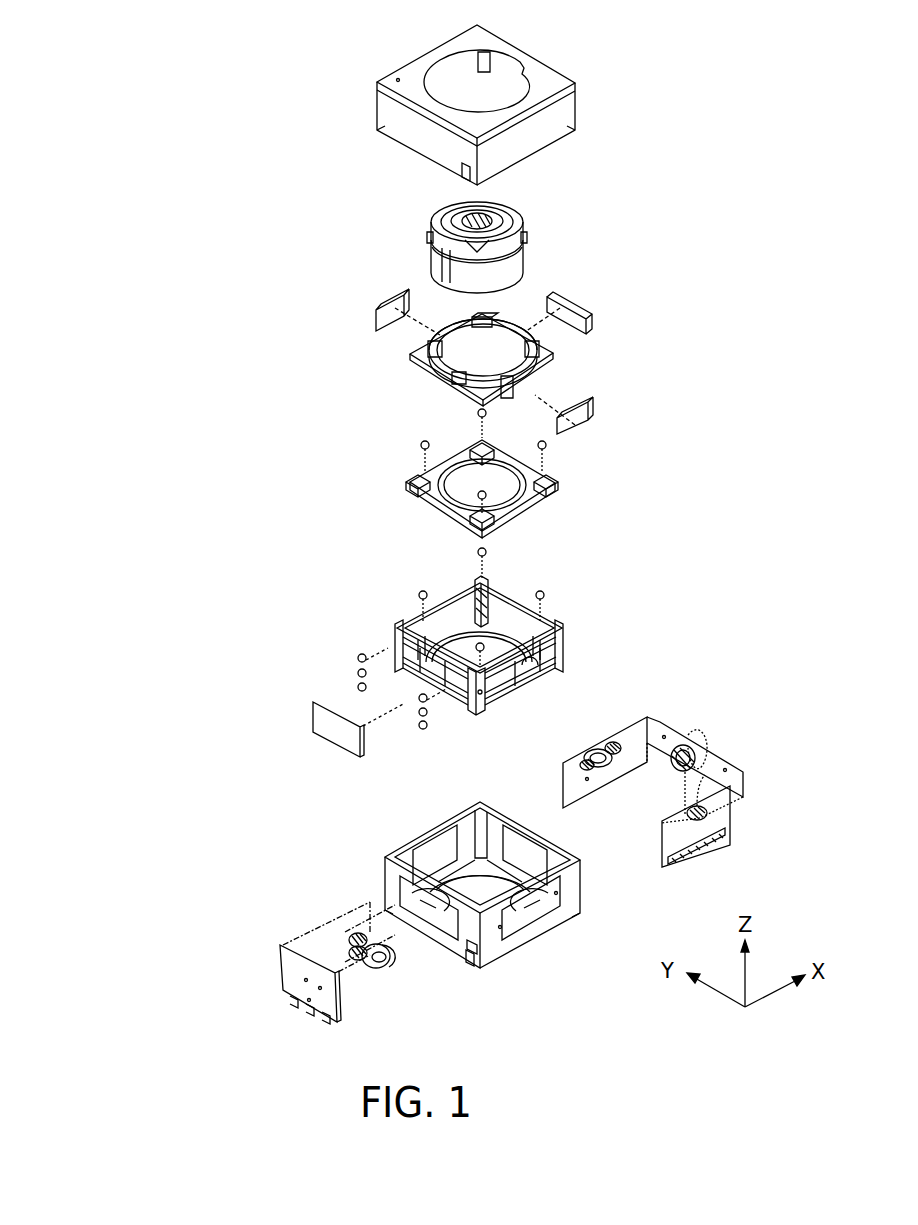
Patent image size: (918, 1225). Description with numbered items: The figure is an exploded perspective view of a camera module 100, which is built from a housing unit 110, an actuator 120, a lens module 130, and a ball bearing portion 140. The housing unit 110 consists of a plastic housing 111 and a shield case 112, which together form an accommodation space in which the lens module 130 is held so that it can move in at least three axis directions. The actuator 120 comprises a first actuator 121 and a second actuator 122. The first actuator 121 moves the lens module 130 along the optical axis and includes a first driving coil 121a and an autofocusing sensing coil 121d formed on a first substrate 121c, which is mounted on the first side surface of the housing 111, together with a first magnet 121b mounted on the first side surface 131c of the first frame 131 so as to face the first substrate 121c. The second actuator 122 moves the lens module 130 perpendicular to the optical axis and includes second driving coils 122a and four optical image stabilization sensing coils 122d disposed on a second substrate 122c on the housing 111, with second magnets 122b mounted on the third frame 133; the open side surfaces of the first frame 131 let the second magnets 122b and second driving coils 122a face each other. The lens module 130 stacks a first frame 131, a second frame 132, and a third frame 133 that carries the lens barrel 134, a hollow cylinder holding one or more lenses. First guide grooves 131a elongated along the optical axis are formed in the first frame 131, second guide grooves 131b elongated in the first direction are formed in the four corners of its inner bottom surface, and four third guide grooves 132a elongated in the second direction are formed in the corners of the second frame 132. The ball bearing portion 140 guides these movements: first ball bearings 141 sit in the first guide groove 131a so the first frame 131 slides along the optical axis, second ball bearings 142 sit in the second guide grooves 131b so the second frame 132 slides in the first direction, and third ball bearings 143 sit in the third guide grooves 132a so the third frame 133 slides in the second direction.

The camera module 100 is at (763, 188).
The housing unit 110 is at (108, 13).
The housing 111 is at (503, 937).
The shield case 112 is at (393, 113).
The actuator 120 is at (176, 153).
The first actuator 121 is at (108, 222).
The first driving coil 121a is at (377, 968).
The first magnet 121b is at (336, 737).
The first substrate 121c is at (283, 965).
The autofocusing (AF) sensing coil 121d is at (350, 948).
The second actuator 122 is at (108, 247).
The second driving coil 122a is at (688, 748).
The second magnet 122b is at (556, 362).
The second substrate 122c is at (421, 573).
The optical image stabilization (OIS) sensing coils 122d is at (105, 397).
The lens module 130 is at (108, 553).
The first frame 131 is at (374, 668).
The first guide groove 131a is at (467, 708).
The second guide groove 131b is at (500, 592).
The first side surface of the first frame 131c is at (418, 686).
The second frame 132 is at (369, 523).
The third guide groove 132a is at (555, 477).
The third frame 133 is at (437, 379).
The lens barrel 134 is at (430, 272).
The ball bearing portion 140 is at (108, 713).
The first ball bearings 141 is at (357, 660).
The second ball bearings 142 is at (421, 591).
The third ball bearings 143 is at (422, 441).